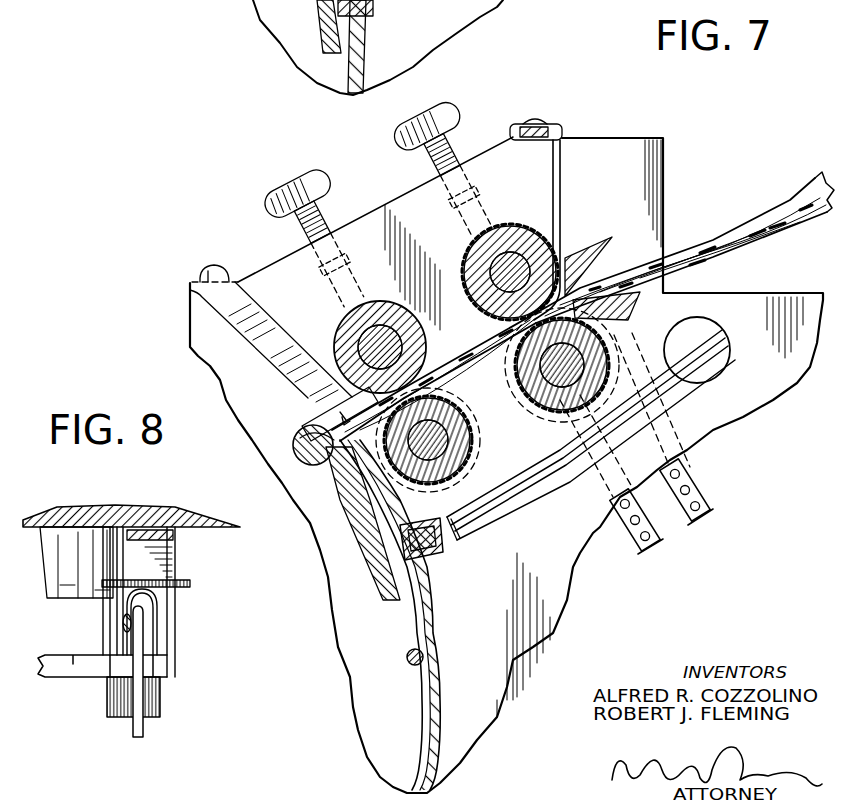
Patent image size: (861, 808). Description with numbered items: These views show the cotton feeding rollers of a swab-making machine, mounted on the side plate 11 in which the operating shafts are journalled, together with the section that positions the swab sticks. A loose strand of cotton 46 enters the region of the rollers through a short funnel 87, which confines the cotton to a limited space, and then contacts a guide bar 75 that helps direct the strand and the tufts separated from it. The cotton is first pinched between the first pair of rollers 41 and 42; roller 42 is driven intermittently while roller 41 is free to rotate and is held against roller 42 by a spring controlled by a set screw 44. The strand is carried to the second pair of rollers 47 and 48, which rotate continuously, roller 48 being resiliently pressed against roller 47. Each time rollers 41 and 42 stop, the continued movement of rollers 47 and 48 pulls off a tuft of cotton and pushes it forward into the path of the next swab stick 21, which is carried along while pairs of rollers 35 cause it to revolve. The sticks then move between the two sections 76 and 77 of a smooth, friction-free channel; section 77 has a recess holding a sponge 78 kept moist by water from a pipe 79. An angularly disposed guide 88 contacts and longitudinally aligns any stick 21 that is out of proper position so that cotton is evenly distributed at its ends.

In FIG. 7, the side plate 11 is at (738, 413).
In FIG. 8, the side plate 11 is at (170, 505).
In FIG. 7, the swab stick 21 is at (294, 437).
In FIG. 8, the swab stick 21 is at (133, 728).
In FIG. 8, the rollers 35 is at (160, 697).
In FIG. 7, the roller 41 is at (582, 358).
In FIG. 7, the roller 42 is at (530, 242).
In FIG. 7, the set screw 44 is at (447, 114).
In FIG. 7, the strand of cotton 46 is at (750, 217).
In FIG. 7, the roller 47 is at (462, 452).
In FIG. 7, the roller 48 is at (347, 336).
In FIG. 7, the guide bar 75 is at (478, 344).
In FIG. 7, the channel section 76 is at (376, 534).
In FIG. 8, the channel section 76 is at (124, 627).
In FIG. 7, the channel section 77 is at (372, 478).
In FIG. 8, the channel section 77 is at (155, 627).
In FIG. 7, the sponge 78 is at (441, 551).
In FIG. 7, the pipe 79 is at (518, 481).
In FIG. 7, the funnel 87 is at (581, 240).
In FIG. 7, the guide 88 is at (312, 420).
In FIG. 8, the guide 88 is at (185, 580).